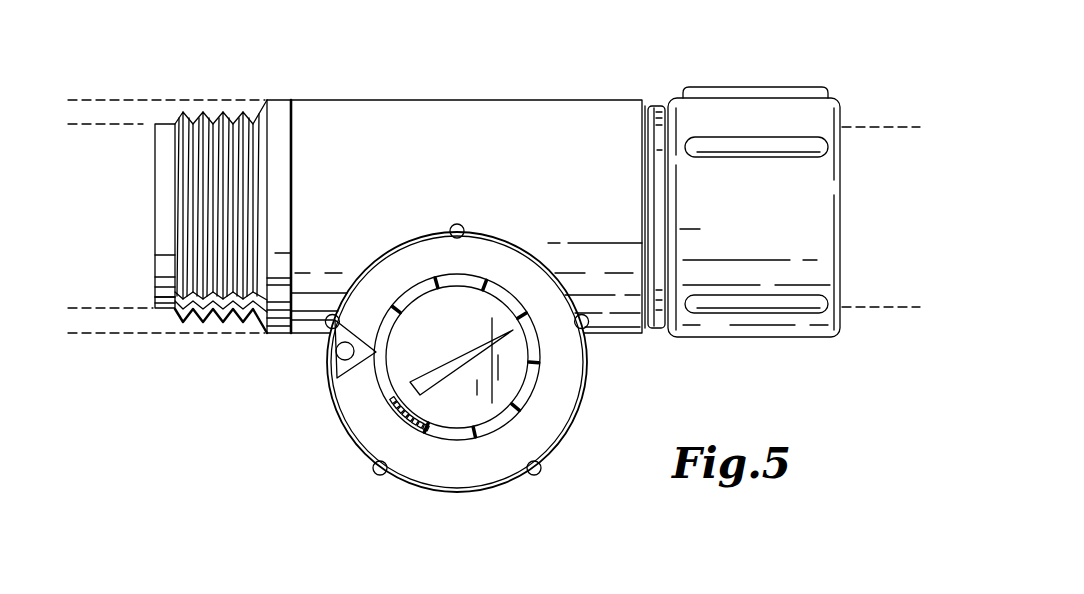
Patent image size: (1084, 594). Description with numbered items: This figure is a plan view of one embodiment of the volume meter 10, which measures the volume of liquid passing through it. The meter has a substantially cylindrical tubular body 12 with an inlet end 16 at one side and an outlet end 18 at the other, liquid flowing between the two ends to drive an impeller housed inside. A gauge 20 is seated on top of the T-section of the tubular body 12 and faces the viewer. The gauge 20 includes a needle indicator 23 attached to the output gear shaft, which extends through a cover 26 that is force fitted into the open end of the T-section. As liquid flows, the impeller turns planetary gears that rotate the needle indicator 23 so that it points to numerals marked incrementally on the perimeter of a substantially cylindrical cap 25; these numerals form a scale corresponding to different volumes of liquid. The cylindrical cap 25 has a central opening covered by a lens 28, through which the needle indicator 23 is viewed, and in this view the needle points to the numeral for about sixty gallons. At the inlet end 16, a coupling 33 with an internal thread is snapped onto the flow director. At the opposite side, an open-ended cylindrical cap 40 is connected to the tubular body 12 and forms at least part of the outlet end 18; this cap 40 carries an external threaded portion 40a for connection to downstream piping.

The volume meter 10 is at (502, 90).
The tubular body 12 is at (350, 116).
The inlet end 16 is at (838, 317).
The outlet end 18 is at (157, 297).
The gauge 20 is at (512, 488).
The needle indicator 23 is at (375, 357).
The cylindrical cap 25 is at (446, 478).
The cover 26 is at (470, 422).
The lens 28 is at (510, 392).
The coupling 33 is at (753, 108).
The cylindrical cap 40 is at (215, 104).
The external threaded portion 40a is at (195, 204).